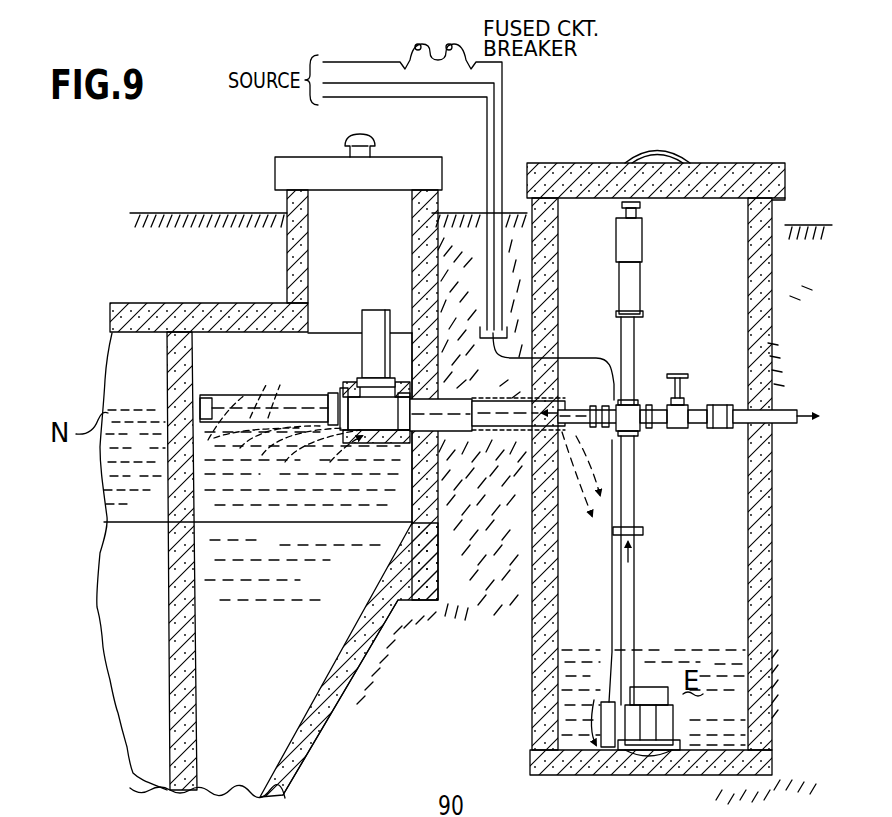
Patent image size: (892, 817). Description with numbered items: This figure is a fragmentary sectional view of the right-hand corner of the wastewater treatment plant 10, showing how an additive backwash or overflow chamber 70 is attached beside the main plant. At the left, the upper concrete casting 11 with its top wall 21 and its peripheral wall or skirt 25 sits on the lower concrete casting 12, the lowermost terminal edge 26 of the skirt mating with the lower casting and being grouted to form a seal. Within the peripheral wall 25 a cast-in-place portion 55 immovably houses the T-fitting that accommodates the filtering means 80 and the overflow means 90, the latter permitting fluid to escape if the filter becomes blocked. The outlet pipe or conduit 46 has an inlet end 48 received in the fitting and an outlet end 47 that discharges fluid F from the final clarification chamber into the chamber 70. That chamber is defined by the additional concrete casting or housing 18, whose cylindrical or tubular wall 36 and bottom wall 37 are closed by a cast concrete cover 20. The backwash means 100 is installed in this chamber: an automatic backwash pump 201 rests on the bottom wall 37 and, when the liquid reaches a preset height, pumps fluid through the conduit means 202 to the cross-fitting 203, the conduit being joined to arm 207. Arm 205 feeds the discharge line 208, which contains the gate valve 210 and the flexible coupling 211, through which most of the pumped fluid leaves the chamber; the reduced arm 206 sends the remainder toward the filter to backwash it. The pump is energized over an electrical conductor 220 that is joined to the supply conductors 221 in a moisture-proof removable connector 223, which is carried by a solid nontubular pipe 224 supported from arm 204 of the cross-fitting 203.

The wastewater treatment plant 10 is at (122, 242).
The upper concrete casting 11 is at (150, 302).
The lower concrete casting 12 is at (320, 745).
The additional concrete casting or housing 18 is at (774, 340).
The cast concrete cover 20 is at (708, 165).
The top wall 21 is at (215, 305).
The peripheral wall or skirt 25 is at (440, 503).
The lowermost terminal edge 26 is at (440, 536).
The cylindrical or tubular wall 36 is at (755, 536).
The bottom wall 37 is at (660, 778).
The outlet pipe or conduit 46 is at (466, 400).
The outlet end 47 is at (580, 410).
The inlet end 48 is at (440, 458).
The cast-in-place portion 55 is at (342, 436).
The backwash or overflow chamber 70 is at (696, 550).
The filtering means 80 is at (298, 382).
The overflow means 90 is at (373, 300).
The backwash means 100 is at (665, 648).
The automatic backwash pump 201 is at (670, 712).
The conduit means 202 is at (640, 594).
The cross-fitting 203 is at (637, 406).
The arm 204 is at (614, 392).
The arm 205 is at (651, 428).
The reduced arm 206 is at (612, 430).
The arm 207 is at (637, 438).
The discharge line 208 is at (790, 428).
The gate valve 210 is at (690, 404).
The flexible coupling 211 is at (716, 432).
The electrical conductor 220 is at (612, 548).
The electrical conductors 221 is at (514, 362).
The moisture-proof removable connector 223 is at (645, 240).
The solid nontubular pipe 224 is at (640, 336).